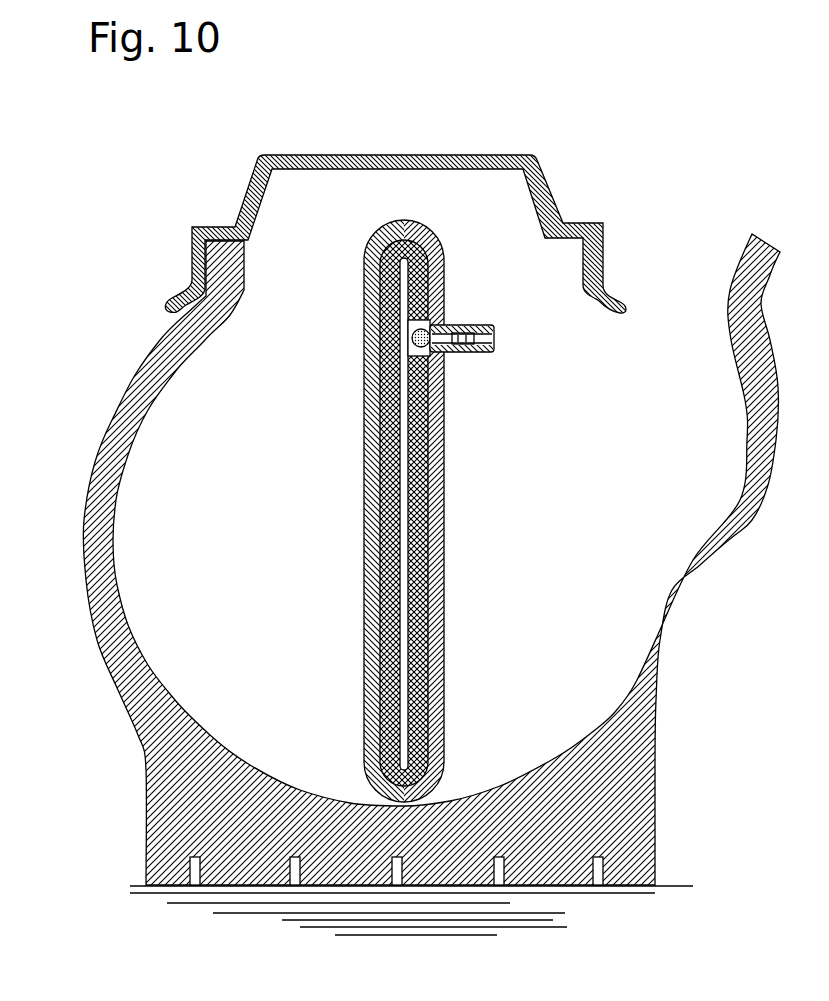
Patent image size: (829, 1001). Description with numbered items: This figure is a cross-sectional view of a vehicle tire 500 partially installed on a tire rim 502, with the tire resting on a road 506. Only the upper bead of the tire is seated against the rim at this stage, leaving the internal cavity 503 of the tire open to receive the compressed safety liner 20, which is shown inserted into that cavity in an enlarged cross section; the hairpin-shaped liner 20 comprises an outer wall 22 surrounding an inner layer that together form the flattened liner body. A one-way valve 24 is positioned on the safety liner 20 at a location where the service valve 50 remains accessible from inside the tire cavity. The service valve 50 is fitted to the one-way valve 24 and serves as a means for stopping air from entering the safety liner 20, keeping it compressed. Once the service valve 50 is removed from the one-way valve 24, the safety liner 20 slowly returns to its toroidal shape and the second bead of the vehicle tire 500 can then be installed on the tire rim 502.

The safety liner 20 is at (409, 511).
The outer tube layer 22 is at (364, 447).
The one-way valve 24 is at (412, 354).
The service valve 50 is at (471, 323).
The vehicle tire 500 is at (112, 678).
The tire rim 502 is at (452, 156).
The internal cavity 503 is at (238, 490).
The road 506 is at (578, 912).